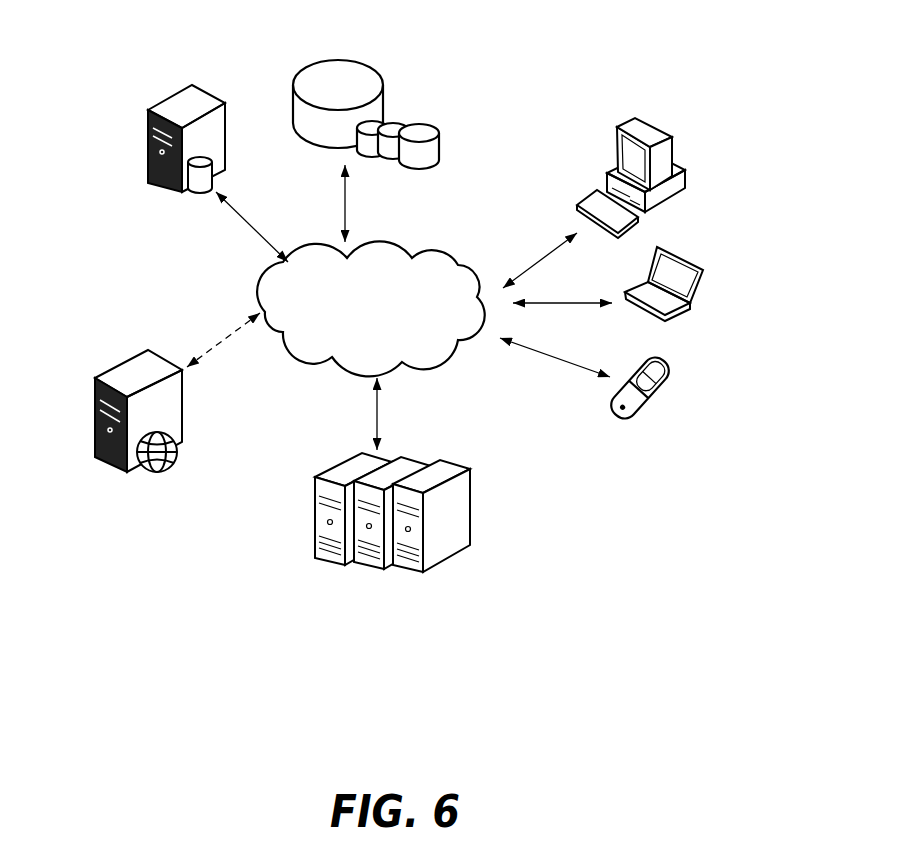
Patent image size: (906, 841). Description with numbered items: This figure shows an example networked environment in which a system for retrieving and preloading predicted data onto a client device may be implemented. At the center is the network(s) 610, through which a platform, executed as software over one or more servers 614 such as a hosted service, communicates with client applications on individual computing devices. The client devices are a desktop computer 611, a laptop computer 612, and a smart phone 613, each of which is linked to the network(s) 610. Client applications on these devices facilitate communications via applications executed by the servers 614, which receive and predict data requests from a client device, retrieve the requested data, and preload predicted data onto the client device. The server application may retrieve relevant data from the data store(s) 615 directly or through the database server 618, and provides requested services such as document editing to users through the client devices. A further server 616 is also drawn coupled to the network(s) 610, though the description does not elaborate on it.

The network(s) 610 is at (382, 231).
The desktop computer 611 is at (671, 114).
The laptop computer 612 is at (705, 242).
The smart phone 613 is at (675, 358).
The servers 614 is at (341, 454).
The data store(s) 615 is at (354, 37).
The web server 616 is at (118, 357).
The database server 618 is at (187, 198).